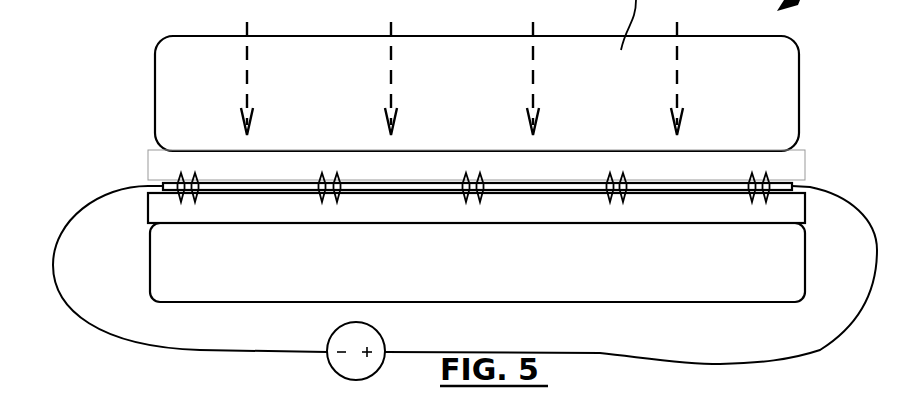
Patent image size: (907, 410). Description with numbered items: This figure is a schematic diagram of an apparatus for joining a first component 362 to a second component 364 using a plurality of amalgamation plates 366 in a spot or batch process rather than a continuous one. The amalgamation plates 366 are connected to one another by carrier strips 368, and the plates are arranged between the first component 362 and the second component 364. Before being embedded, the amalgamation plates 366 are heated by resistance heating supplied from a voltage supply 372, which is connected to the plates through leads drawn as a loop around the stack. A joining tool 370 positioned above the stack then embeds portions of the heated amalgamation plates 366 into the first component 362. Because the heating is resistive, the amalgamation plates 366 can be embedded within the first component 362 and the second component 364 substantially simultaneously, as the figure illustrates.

The first component 362 is at (792, 207).
The second component 364 is at (163, 165).
The amalgamation plates 366 is at (767, 178).
The carrier strips 368 is at (710, 185).
The joining tool 370 is at (167, 80).
The voltage supply 372 is at (332, 333).